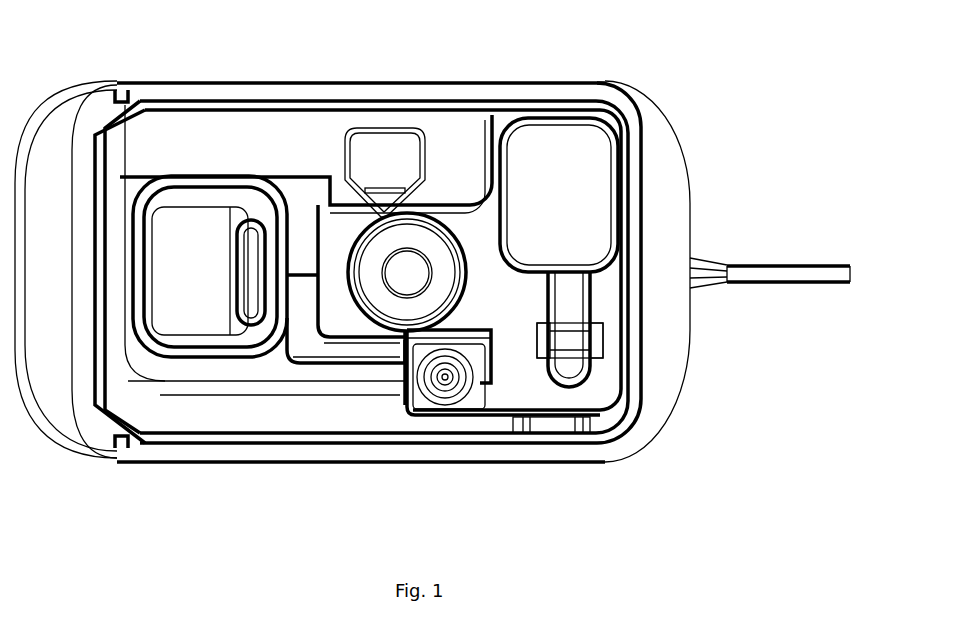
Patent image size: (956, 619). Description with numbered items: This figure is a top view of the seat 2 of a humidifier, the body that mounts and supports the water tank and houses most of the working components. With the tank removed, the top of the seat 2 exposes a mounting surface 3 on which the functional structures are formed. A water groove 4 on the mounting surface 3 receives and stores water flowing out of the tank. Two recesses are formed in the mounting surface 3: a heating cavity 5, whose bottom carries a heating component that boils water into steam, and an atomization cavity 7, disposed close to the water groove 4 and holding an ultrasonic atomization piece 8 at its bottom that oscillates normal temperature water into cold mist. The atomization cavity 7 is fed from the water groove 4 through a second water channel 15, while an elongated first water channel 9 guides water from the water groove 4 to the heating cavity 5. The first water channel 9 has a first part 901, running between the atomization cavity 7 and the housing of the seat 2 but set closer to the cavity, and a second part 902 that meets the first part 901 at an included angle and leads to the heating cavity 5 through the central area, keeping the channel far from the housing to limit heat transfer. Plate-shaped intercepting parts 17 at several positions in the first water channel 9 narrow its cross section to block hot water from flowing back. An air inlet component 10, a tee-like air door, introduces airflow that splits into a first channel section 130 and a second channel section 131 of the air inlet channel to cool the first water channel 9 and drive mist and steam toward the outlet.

The seat 2 is at (668, 88).
The mounting surface 3 is at (200, 413).
The water groove 4 is at (611, 284).
The heating cavity 5 is at (200, 247).
The atomization cavity 7 is at (462, 322).
The ultrasonic atomization piece 8 is at (468, 290).
The first water channel 9 is at (370, 372).
The air inlet component 10 is at (370, 128).
The second water channel 15 is at (488, 253).
The intercepting part 17 is at (303, 282).
The first channel section 130 is at (433, 158).
The second channel section 131 is at (228, 148).
The first part 901 is at (337, 355).
The second part 902 is at (305, 207).